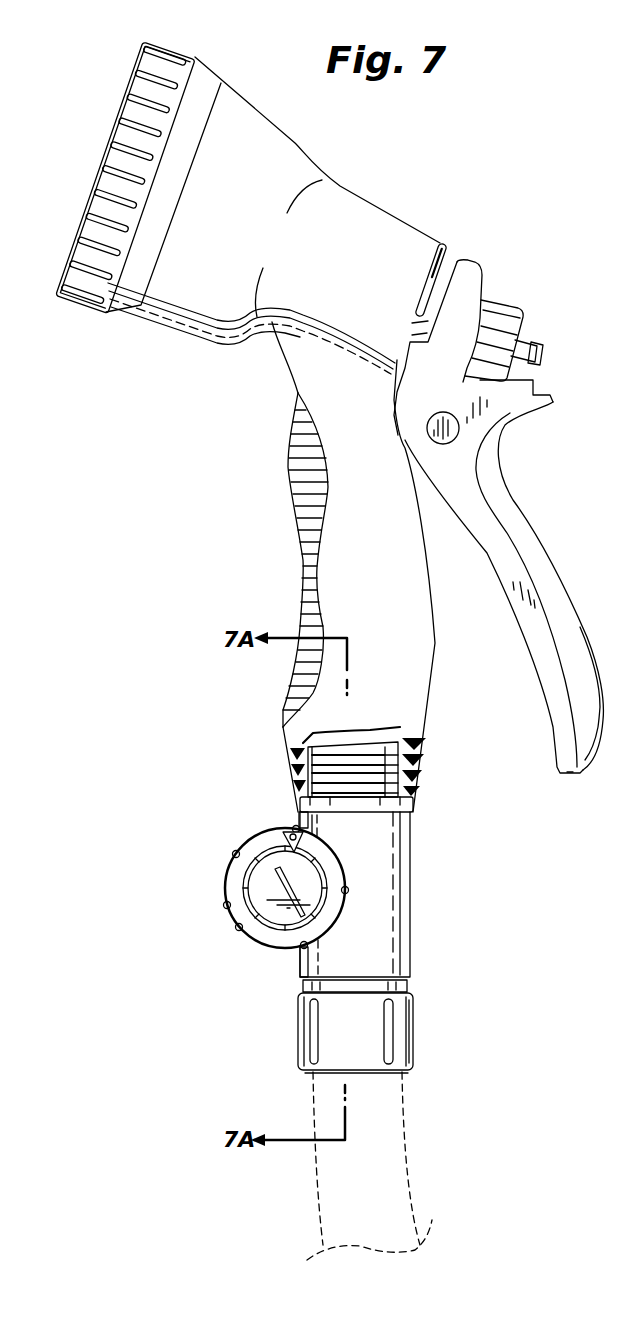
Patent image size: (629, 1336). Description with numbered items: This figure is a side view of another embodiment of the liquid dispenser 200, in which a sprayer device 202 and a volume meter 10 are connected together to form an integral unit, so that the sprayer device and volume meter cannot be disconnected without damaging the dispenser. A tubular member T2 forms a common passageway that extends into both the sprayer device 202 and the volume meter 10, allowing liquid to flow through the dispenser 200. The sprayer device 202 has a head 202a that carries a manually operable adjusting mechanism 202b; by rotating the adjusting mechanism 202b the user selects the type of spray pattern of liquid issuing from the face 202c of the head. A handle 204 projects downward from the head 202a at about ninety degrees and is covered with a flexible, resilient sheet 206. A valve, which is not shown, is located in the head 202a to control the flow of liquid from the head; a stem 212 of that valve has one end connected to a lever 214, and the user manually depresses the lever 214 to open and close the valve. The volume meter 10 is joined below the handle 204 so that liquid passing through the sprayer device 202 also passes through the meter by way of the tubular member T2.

The volume meter 10 is at (422, 906).
The liquid dispenser 200 is at (431, 219).
The sprayer device 202 is at (218, 310).
The head 202a is at (257, 123).
The adjusting mechanism 202b is at (80, 310).
The face 202c is at (103, 147).
The handle 204 is at (347, 575).
The flexible, resilient sheet 206 is at (421, 679).
The stem 212 is at (535, 337).
The lever 214 is at (557, 580).
The tubular member T2 is at (350, 742).